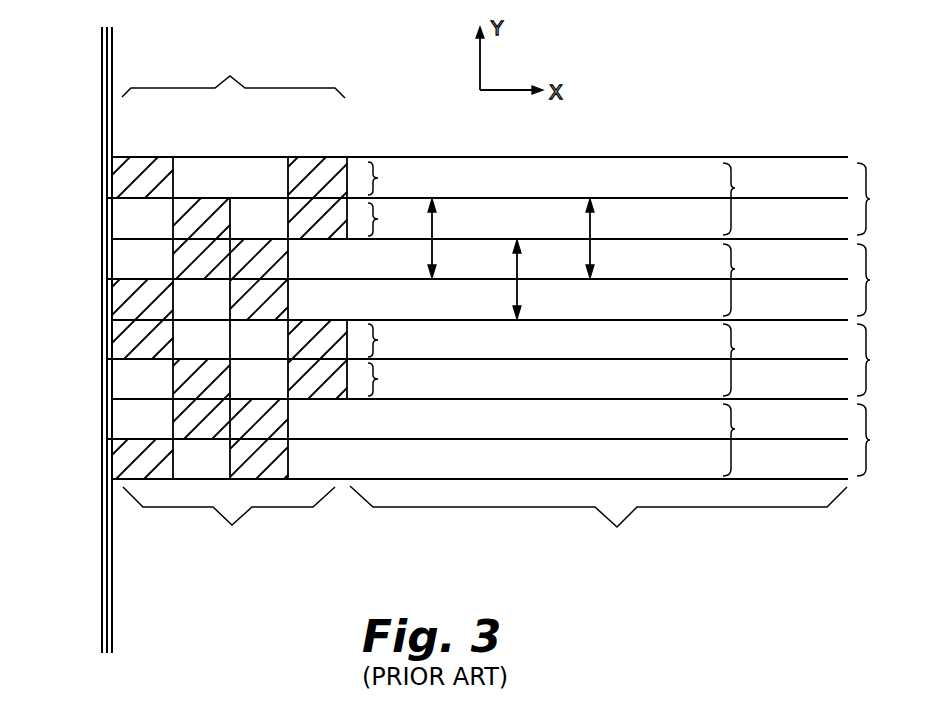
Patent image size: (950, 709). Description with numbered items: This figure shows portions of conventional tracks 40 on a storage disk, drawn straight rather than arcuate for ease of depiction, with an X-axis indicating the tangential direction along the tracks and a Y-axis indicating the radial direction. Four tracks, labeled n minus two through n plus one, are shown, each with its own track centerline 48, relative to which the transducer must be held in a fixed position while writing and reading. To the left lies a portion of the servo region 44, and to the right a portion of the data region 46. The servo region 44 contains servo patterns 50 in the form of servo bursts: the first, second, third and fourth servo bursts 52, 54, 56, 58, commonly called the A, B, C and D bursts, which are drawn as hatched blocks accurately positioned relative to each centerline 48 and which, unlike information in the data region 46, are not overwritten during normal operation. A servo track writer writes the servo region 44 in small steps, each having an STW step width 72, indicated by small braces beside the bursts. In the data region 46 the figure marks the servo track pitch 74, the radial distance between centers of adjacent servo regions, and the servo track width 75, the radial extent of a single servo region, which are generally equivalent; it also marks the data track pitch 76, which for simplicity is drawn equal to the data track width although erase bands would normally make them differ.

The track 40 is at (813, 319).
The servo region 44 is at (229, 536).
The data region 46 is at (598, 520).
The track centerline 48 is at (98, 439).
The servo pattern 50 is at (233, 69).
The first servo burst 52 is at (142, 286).
The second servo burst 54 is at (201, 266).
The third servo burst 56 is at (259, 286).
The fourth servo burst 58 is at (317, 246).
The STW step width 72 is at (389, 279).
The servo track pitch 74 is at (450, 238).
The servo track width 75 is at (535, 279).
The data track pitch 76 is at (605, 238).